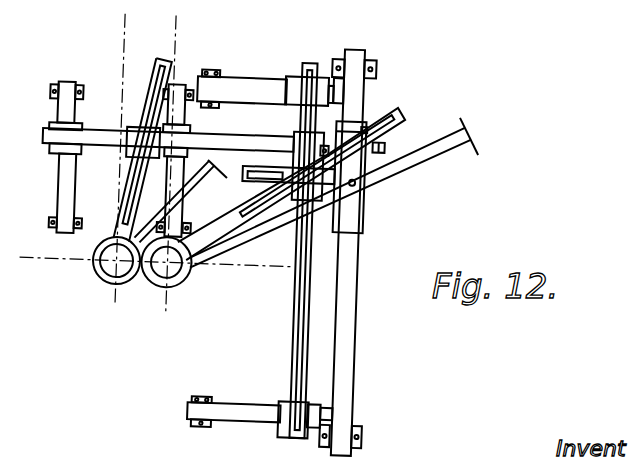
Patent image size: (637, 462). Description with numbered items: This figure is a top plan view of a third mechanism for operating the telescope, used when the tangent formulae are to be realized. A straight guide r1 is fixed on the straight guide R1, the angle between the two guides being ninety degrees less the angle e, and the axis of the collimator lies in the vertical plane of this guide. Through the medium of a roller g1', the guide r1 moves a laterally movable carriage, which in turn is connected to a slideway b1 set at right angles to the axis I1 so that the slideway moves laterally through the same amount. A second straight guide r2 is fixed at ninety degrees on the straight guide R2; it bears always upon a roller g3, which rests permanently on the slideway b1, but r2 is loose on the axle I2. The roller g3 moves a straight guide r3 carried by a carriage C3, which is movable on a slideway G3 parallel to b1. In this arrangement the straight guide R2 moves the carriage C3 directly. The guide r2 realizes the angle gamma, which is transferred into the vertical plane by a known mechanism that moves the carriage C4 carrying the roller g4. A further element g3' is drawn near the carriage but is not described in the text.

The straight guide r1 is at (153, 63).
The angle e is at (142, 102).
The roller g1' is at (127, 157).
The axis I1 is at (106, 279).
The axle I2 is at (166, 277).
The straight guide r2 is at (398, 114).
The straight guide R1 is at (197, 199).
The straight guide R2 is at (437, 150).
The slideway b1 is at (301, 360).
The roller g3 is at (287, 156).
The straight guide r3 is at (252, 174).
The slideway G3 is at (353, 321).
The carriage C3 is at (362, 218).
The carriage C4 is at (359, 155).
The pin g3' is at (387, 102).
The roller g4 is at (381, 144).